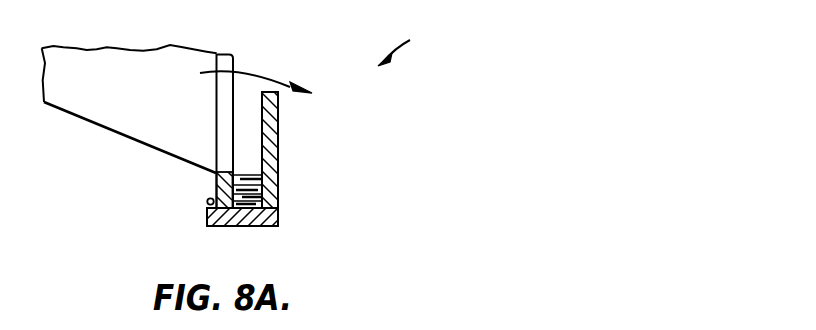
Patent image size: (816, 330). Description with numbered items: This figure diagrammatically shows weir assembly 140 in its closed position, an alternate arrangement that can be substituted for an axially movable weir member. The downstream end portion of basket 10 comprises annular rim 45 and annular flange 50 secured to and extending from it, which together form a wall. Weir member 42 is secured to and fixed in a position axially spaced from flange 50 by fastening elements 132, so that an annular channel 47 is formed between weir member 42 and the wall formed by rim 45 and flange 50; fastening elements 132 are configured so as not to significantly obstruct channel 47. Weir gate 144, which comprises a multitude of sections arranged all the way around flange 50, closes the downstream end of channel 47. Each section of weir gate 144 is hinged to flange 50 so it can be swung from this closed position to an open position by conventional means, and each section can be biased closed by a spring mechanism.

The basket 10 is at (135, 142).
The annular rim 45 is at (231, 60).
The weir member 42 is at (279, 156).
The annular flange 50 is at (214, 183).
The fastening elements 132 is at (262, 198).
The channel 47 is at (279, 212).
The weir gate 144 is at (230, 228).
The weir assembly 140 is at (413, 48).